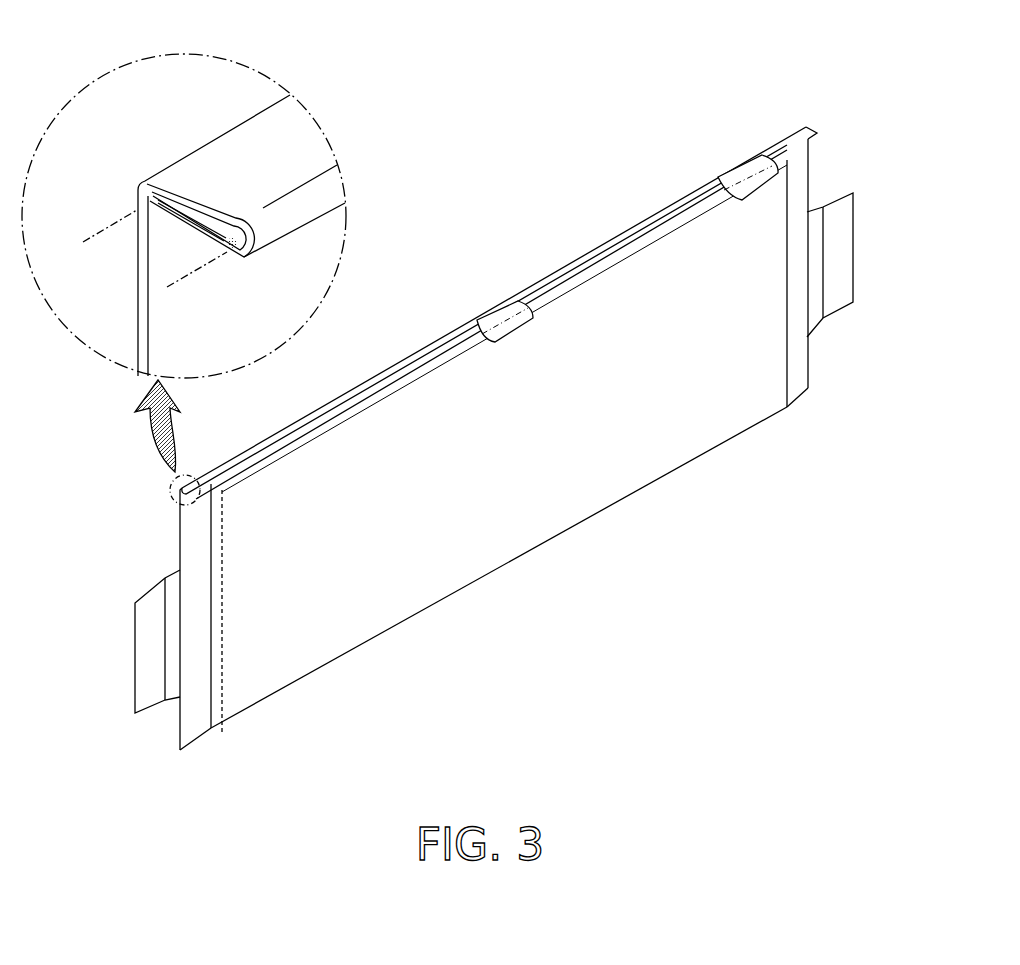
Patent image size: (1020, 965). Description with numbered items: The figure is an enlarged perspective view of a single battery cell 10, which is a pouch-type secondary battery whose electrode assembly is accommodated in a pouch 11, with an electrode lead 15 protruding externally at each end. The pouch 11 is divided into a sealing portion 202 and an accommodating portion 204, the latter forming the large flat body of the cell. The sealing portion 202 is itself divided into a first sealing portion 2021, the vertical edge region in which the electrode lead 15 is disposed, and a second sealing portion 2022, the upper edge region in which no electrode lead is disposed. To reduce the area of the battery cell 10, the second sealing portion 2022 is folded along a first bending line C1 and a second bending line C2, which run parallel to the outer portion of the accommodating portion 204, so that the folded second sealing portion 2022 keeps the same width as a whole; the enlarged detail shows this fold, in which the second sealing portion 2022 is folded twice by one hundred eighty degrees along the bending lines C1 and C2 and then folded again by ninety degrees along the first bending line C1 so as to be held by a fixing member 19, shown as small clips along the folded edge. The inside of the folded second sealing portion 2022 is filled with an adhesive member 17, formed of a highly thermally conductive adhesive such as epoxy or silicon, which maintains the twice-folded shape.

The battery cell 10 is at (397, 20).
The pouch 11 is at (488, 537).
The electrode lead 15 is at (833, 295).
The adhesive member 17 is at (232, 248).
The fixing member 19 is at (500, 313).
The sealing portion 202 is at (663, 73).
The first sealing portion 2021 is at (797, 157).
The second sealing portion 2022 is at (683, 193).
The accommodating portion 204 is at (590, 317).
The first bending line C1 is at (108, 227).
The second bending line C2 is at (190, 273).